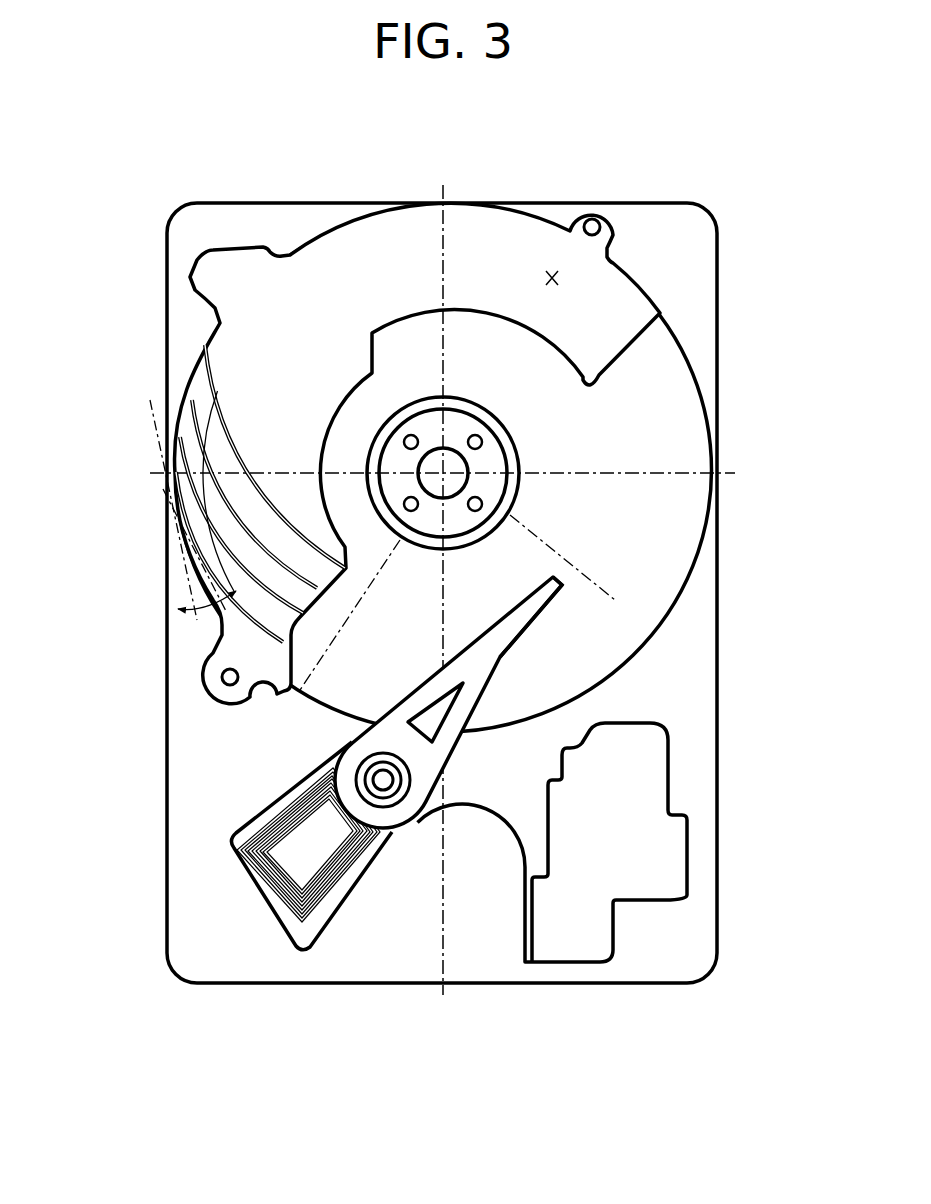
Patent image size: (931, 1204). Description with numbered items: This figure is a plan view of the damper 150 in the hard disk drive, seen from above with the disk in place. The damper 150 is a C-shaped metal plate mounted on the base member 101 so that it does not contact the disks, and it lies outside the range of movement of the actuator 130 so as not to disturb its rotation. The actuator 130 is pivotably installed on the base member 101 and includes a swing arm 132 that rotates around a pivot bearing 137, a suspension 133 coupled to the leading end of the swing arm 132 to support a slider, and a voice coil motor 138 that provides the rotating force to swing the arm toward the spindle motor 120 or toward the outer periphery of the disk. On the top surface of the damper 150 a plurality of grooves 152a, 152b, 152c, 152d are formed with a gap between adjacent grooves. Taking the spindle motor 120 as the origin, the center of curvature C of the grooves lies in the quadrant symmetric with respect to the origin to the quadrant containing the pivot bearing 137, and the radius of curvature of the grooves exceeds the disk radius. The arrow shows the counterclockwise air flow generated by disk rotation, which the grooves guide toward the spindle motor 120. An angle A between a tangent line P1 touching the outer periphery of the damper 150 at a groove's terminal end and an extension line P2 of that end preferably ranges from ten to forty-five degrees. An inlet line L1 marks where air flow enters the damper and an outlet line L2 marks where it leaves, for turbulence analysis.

The base member 101 is at (708, 628).
The spindle motor 120 is at (632, 520).
The actuator 130 is at (339, 810).
The swing arm 132 is at (433, 767).
The suspension 133 is at (540, 620).
The pivot bearing 137 is at (387, 785).
The voice coil motor 138 is at (207, 867).
The damper 150 is at (417, 227).
The groove 152a is at (212, 373).
The groove 152b is at (215, 412).
The groove 152c is at (222, 450).
The groove 152d is at (233, 493).
The center of curvature C is at (553, 264).
The tangent line P1 is at (150, 400).
The extension line P2 is at (163, 489).
The angle A is at (189, 594).
The inlet line L1 is at (564, 577).
The outlet line L2 is at (353, 615).